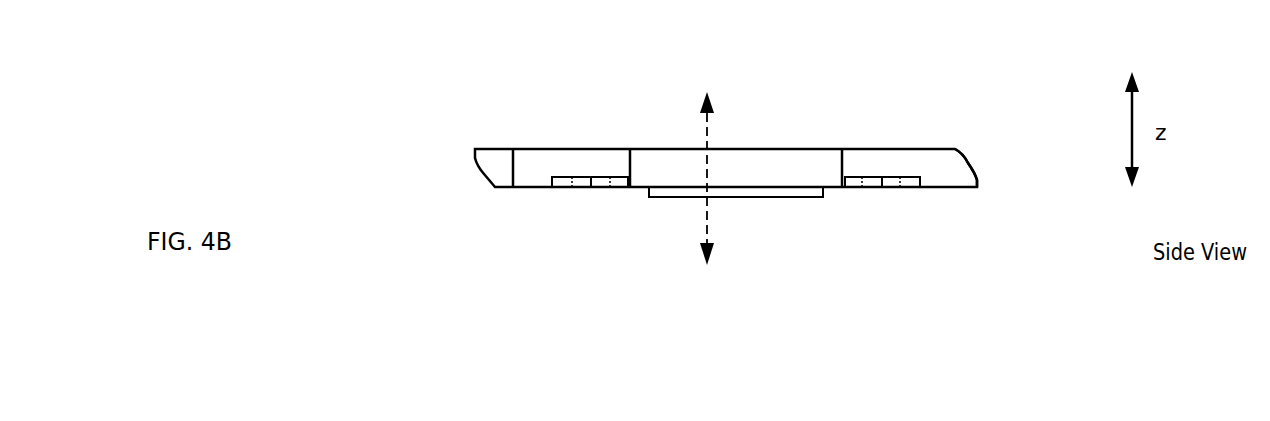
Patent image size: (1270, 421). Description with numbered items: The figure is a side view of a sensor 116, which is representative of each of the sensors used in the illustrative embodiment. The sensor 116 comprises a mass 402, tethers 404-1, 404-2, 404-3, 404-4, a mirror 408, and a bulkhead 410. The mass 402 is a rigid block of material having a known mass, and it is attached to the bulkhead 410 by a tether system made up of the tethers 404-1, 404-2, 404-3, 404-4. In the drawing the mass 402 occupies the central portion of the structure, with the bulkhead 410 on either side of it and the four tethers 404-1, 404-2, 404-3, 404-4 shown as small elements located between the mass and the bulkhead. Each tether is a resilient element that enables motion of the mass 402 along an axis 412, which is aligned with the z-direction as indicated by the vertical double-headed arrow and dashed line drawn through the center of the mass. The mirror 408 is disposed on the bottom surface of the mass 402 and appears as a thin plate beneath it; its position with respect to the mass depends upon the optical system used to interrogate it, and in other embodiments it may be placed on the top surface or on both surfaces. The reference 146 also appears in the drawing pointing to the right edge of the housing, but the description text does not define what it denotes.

The sensor 116 is at (430, 65).
The bulkhead 410 is at (533, 158).
The axis 412 is at (705, 130).
The mass 402 is at (783, 180).
The housing edge 146 is at (958, 168).
The mirror 408 is at (764, 198).
The tether 404-1 is at (562, 190).
The tether 404-2 is at (619, 190).
The tether 404-3 is at (850, 190).
The tether 404-4 is at (908, 190).